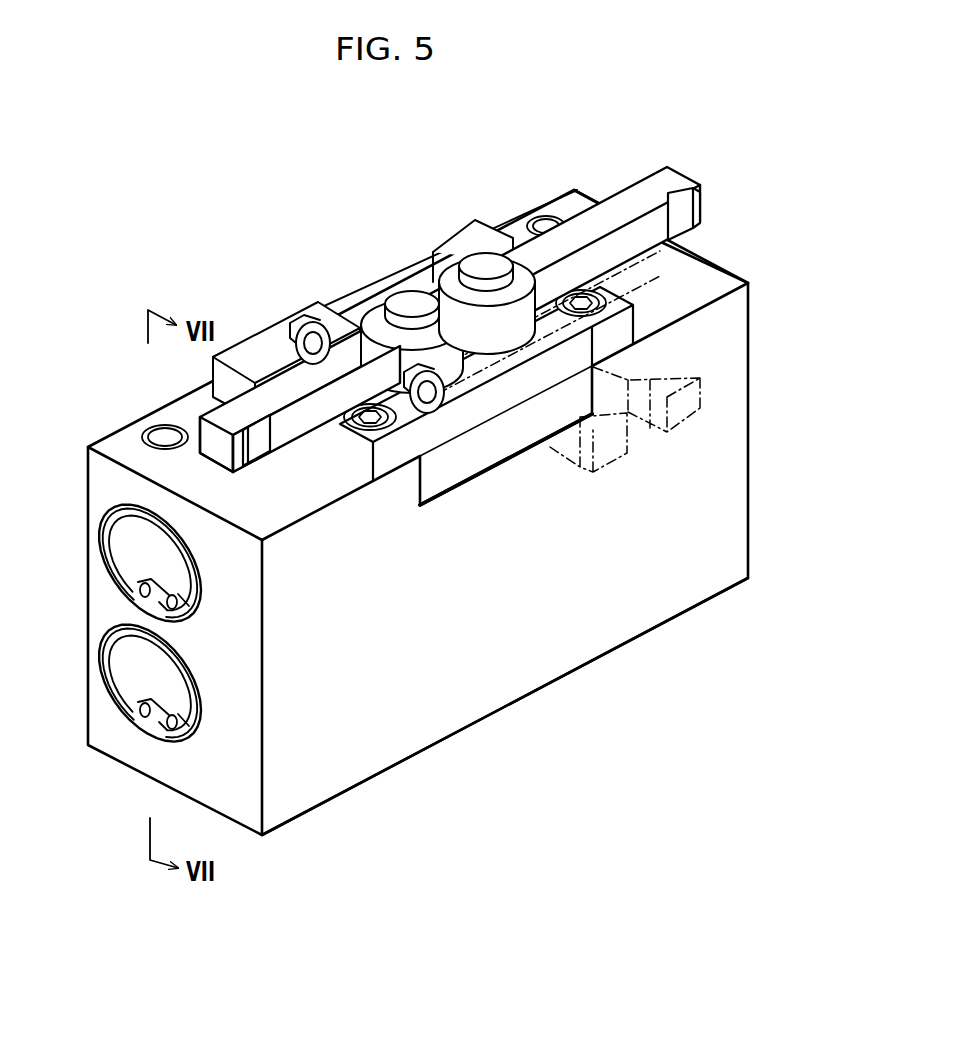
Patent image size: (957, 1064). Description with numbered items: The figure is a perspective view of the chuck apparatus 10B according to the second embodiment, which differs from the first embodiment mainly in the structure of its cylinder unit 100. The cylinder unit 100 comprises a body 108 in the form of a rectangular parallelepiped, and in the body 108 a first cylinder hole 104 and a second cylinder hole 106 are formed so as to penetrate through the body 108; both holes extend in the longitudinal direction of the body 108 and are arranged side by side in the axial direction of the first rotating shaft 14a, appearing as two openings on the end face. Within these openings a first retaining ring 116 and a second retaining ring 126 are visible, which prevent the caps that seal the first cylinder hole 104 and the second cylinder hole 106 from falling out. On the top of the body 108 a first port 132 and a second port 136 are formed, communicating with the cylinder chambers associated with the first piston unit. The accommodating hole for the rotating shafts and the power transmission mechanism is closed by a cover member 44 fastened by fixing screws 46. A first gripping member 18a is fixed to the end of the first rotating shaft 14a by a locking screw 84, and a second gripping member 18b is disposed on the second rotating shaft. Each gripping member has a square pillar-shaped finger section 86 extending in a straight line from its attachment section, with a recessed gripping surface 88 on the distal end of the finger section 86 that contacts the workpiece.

The chuck apparatus 10B is at (200, 161).
The cylinder unit 100 is at (472, 327).
The first rotating shaft 14a is at (481, 264).
The first gripping member 18a is at (485, 310).
The second gripping member 18b is at (203, 412).
The cover member 44 is at (472, 460).
The fixing screws 46 is at (604, 300).
The locking screw 84 is at (294, 340).
The finger section 86 is at (680, 178).
The gripping surface 88 is at (684, 213).
The first cylinder hole 104 is at (110, 563).
The second cylinder hole 106 is at (110, 683).
The body 108 is at (648, 618).
The first retaining ring 116 is at (135, 597).
The second retaining ring 126 is at (135, 717).
The first port 132 is at (543, 216).
The second port 136 is at (158, 436).